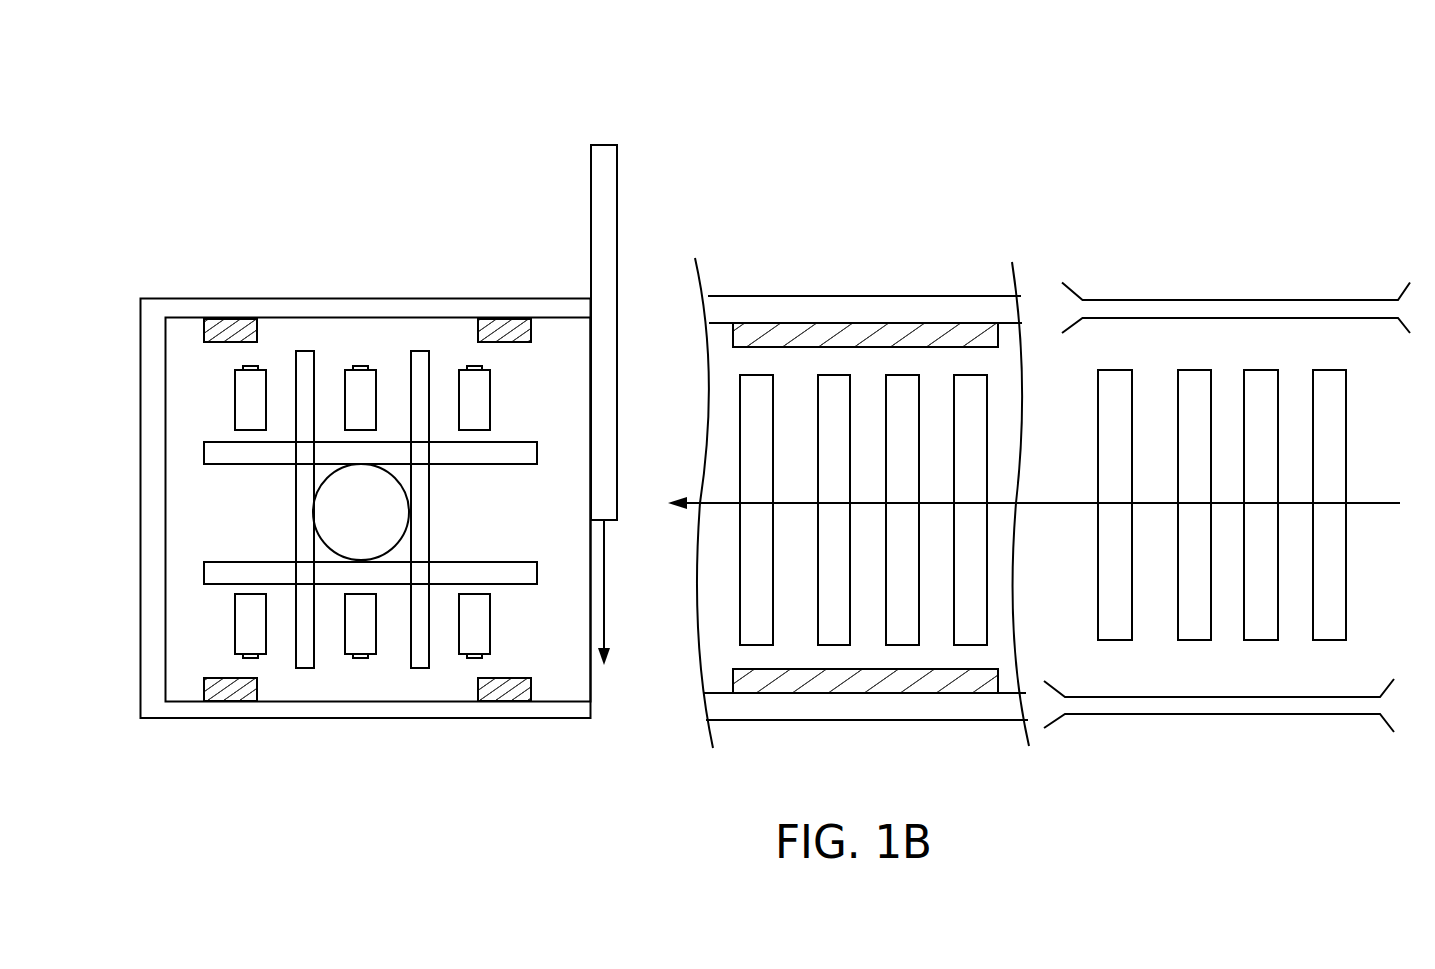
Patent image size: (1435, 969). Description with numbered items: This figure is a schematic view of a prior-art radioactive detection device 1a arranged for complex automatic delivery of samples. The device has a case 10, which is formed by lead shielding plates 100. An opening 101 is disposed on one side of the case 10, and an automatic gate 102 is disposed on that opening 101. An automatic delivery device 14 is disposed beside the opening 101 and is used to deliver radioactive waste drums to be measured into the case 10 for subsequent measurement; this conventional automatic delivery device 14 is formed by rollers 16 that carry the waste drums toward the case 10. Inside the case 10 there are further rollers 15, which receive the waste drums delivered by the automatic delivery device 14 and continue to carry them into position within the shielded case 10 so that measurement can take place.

The radioactive detection device 1a is at (193, 118).
The case 10 is at (571, 223).
The lead shielding plates 100 is at (198, 712).
The opening 101 is at (578, 657).
The automatic gate 102 is at (608, 340).
The rollers 15 is at (360, 640).
The automatic delivery device 14 is at (1408, 243).
The rollers 16 is at (753, 627).